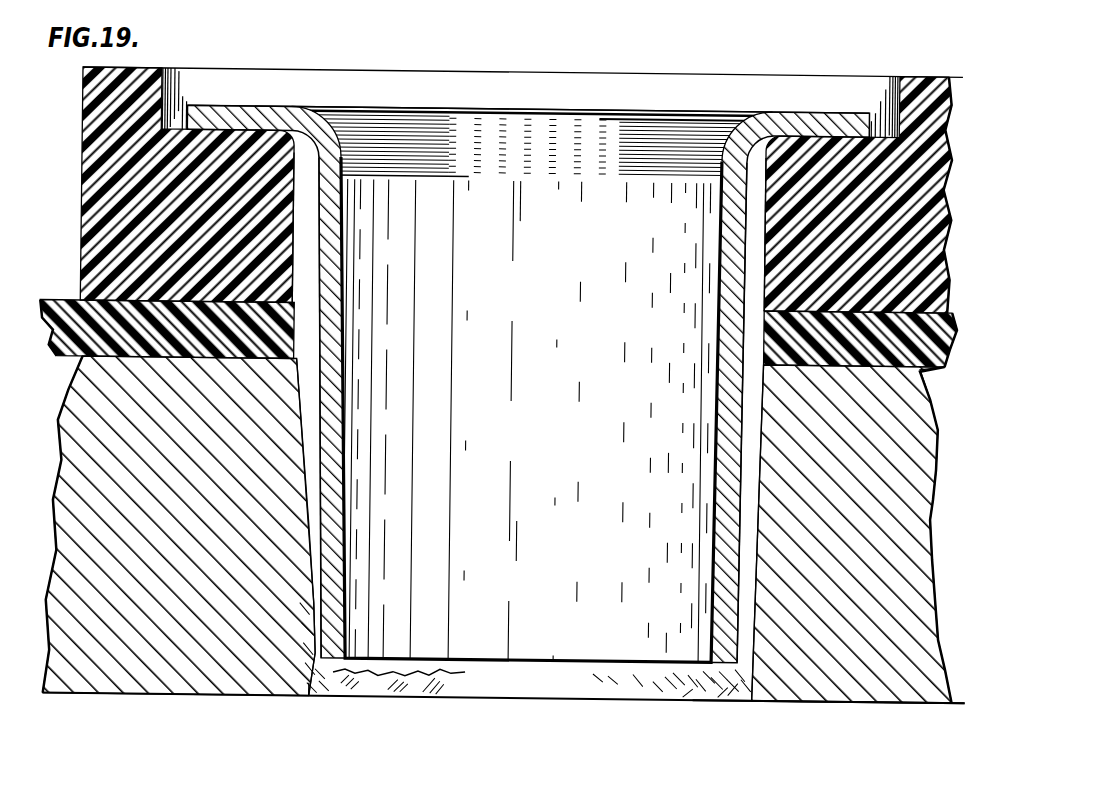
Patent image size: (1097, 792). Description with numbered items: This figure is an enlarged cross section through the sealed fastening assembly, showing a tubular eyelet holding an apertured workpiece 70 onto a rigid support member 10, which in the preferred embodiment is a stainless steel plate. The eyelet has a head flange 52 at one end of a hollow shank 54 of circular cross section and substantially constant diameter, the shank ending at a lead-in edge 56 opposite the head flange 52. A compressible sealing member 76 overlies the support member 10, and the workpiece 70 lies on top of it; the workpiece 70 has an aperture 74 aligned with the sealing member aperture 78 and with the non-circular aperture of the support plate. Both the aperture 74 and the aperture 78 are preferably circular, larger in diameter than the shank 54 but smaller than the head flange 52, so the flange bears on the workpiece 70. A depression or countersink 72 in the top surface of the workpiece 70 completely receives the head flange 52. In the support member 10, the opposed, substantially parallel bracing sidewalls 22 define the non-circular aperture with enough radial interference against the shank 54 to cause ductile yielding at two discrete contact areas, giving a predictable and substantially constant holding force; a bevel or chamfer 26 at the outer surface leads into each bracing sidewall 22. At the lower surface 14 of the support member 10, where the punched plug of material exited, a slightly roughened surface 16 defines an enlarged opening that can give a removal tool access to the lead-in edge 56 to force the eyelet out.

The rigid support member 10 is at (85, 520).
The lower surface 14 is at (793, 707).
The roughened surface 16 is at (329, 687).
The bracing sidewalls 22 is at (525, 384).
The bevel or chamfer 26 is at (314, 364).
The head flange 52 is at (800, 104).
The hollow shank 54 is at (556, 498).
The lead-in edge 56 is at (414, 673).
The workpiece 70 is at (284, 231).
The depression or countersink 72 is at (160, 87).
The workpiece aperture 74 is at (764, 252).
The compressible sealing member 76 is at (50, 357).
The sealing member aperture 78 is at (300, 330).